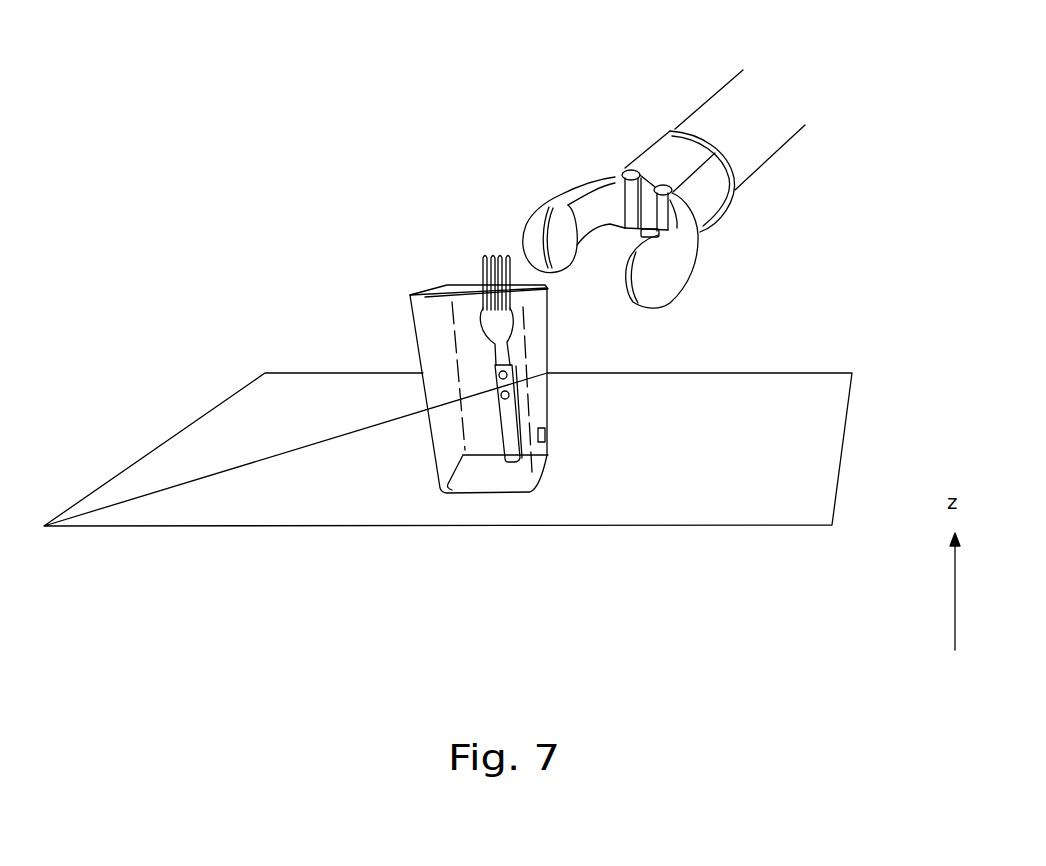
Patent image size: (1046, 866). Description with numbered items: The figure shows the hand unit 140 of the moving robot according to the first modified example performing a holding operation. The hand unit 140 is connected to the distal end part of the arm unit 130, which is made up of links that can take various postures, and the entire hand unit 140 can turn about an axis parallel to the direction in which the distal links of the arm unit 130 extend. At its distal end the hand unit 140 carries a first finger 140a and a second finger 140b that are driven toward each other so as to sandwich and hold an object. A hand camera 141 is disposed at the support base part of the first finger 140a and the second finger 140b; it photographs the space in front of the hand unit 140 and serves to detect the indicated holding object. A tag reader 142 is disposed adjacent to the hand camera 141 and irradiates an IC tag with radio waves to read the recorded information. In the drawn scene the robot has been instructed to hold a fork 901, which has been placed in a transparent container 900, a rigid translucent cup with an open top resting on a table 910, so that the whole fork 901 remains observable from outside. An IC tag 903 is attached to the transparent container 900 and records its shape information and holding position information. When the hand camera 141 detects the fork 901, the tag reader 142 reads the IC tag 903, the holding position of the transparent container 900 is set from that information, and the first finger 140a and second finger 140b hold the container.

The arm unit 130 is at (730, 102).
The hand unit 140 is at (661, 152).
The first finger 140a is at (543, 210).
The second finger 140b is at (680, 266).
The hand camera 141 is at (628, 229).
The tag reader 142 is at (650, 237).
The transparent container 900 is at (410, 320).
The fork 901 is at (483, 266).
The IC tag 903 is at (547, 433).
The table 910 is at (830, 383).